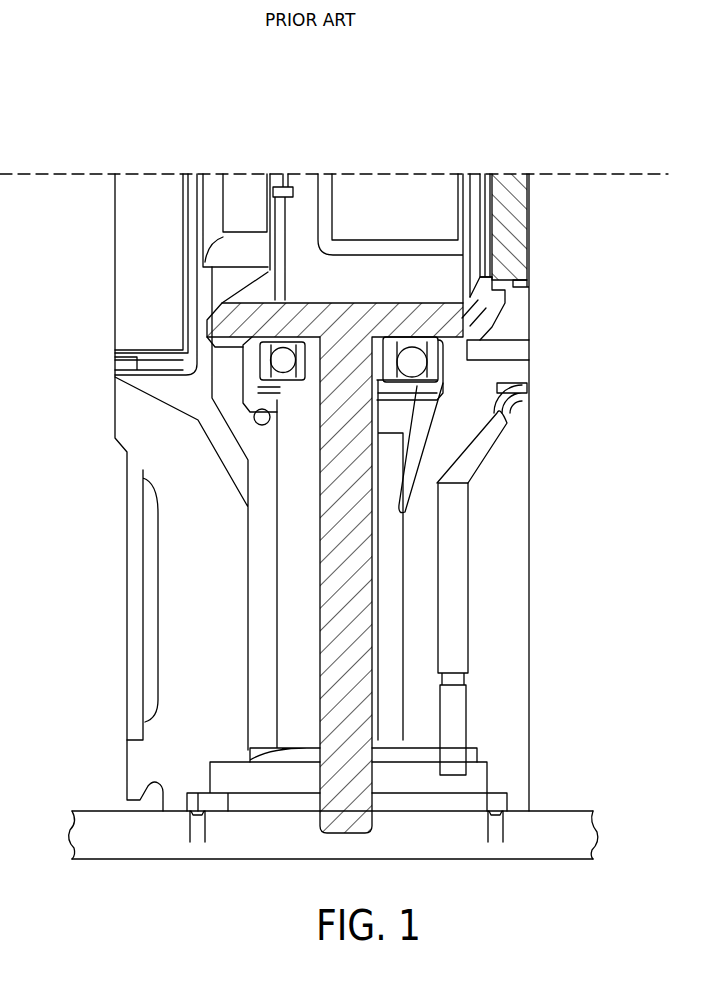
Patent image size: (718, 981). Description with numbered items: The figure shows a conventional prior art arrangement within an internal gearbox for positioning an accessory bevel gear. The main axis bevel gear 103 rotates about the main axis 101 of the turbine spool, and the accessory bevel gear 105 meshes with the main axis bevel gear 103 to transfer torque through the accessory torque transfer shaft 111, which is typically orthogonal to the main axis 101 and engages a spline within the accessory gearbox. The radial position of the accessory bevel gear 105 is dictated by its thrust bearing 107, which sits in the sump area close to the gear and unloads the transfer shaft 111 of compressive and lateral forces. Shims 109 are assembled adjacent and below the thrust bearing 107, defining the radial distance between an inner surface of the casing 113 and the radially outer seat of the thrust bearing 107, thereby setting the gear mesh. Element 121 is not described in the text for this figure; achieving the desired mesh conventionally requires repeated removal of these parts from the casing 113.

The main axis 101 is at (36, 176).
The main axis bevel gear 103 is at (515, 242).
The accessory bevel gear 105 is at (477, 333).
The thrust bearing 107 is at (427, 361).
The shims 109 is at (417, 388).
The accessory torque transfer shaft 111 is at (345, 722).
The casing 113 is at (513, 618).
The base plate 121 is at (568, 837).